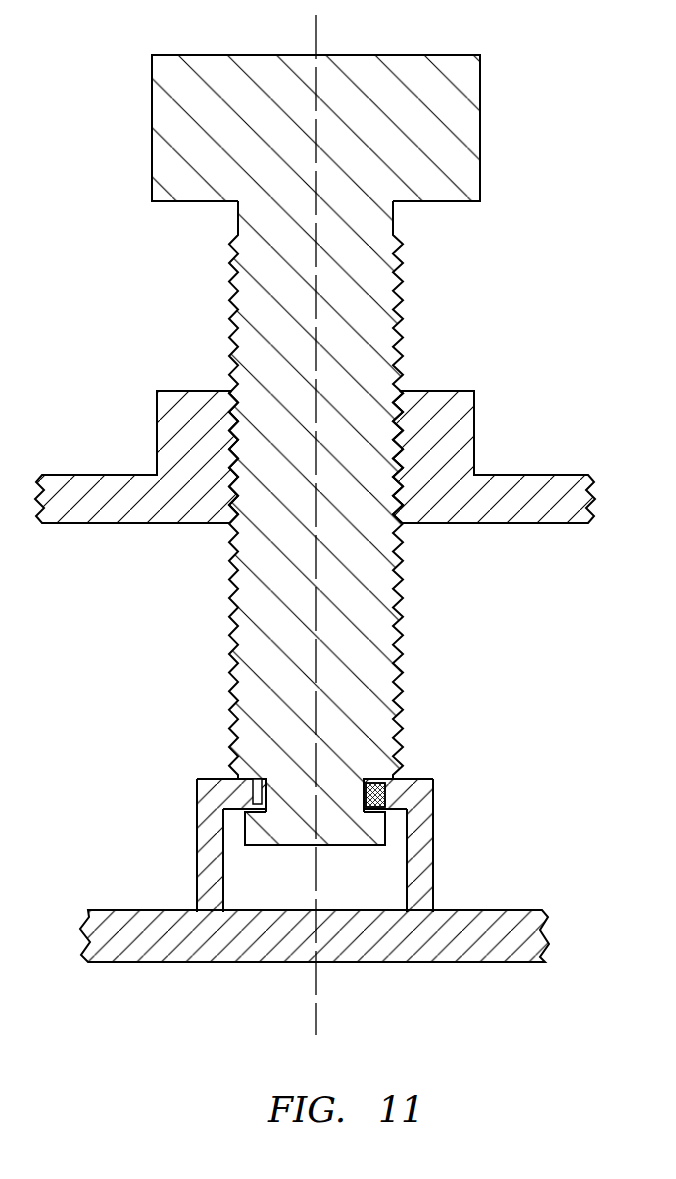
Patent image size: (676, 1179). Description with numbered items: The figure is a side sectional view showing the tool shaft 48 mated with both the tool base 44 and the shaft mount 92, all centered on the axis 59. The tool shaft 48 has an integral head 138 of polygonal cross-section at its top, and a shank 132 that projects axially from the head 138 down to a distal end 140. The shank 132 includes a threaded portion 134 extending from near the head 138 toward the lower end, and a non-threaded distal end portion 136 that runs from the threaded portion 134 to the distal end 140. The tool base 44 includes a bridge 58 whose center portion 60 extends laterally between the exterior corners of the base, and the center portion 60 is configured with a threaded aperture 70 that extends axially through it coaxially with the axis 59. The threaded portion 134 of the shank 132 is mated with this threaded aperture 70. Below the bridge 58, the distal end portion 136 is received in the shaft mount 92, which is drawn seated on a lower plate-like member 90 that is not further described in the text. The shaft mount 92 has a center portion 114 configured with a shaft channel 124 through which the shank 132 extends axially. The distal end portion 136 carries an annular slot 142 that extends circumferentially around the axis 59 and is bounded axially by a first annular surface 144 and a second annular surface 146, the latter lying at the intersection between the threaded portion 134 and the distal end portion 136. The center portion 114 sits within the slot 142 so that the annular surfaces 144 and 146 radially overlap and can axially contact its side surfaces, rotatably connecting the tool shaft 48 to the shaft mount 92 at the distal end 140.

The tool shaft 48 is at (377, 520).
The head 138 is at (480, 115).
The shank 132 is at (414, 296).
The threaded portion 134 is at (222, 350).
The threaded aperture 70 is at (410, 428).
The center portion 60 is at (531, 431).
The bridge 58 is at (522, 475).
The tool base 44 is at (332, 430).
The second annular surface 146 is at (392, 790).
The center portion 114 is at (415, 779).
The shaft mount 92 is at (338, 830).
The annular slot 142 is at (245, 790).
The shaft channel 124 is at (378, 795).
The first annular surface 144 is at (367, 797).
The distal end portion 136 is at (255, 858).
The distal end 140 is at (288, 847).
The base plate 90 is at (568, 936).
The axis 59 is at (316, 1033).